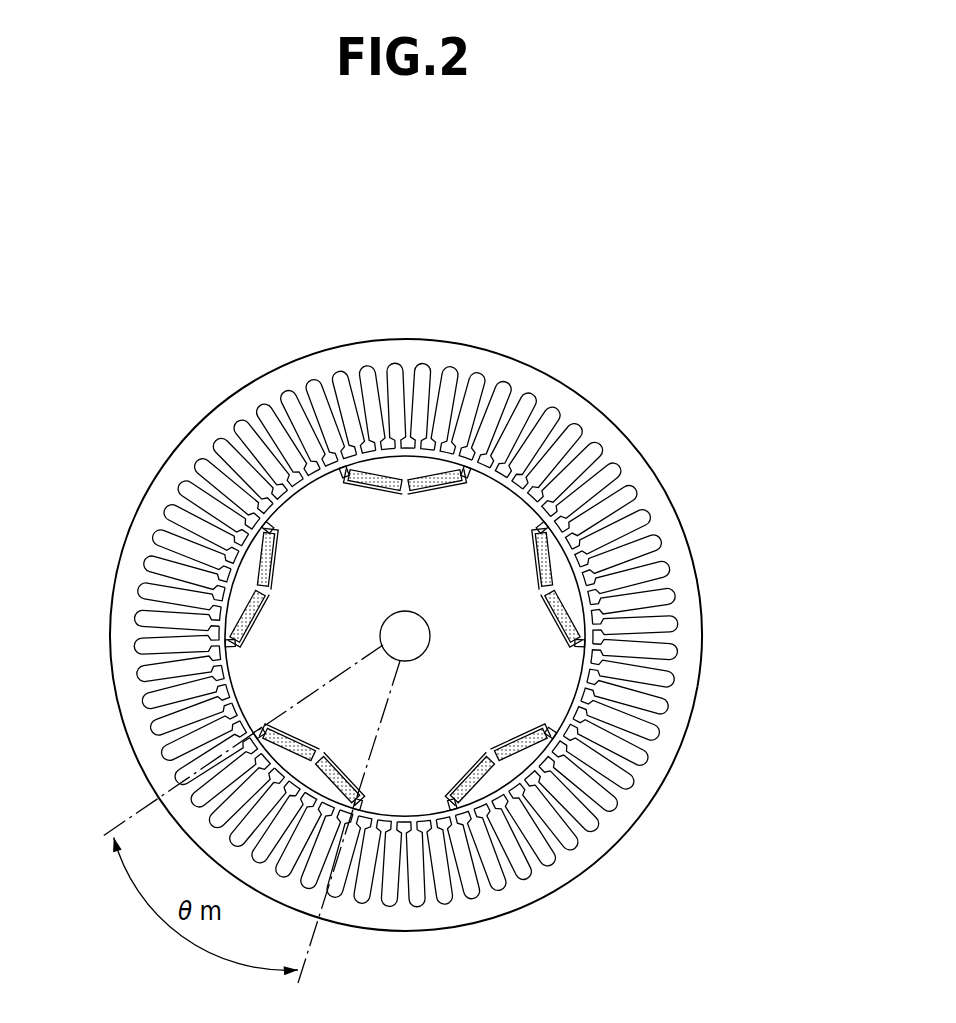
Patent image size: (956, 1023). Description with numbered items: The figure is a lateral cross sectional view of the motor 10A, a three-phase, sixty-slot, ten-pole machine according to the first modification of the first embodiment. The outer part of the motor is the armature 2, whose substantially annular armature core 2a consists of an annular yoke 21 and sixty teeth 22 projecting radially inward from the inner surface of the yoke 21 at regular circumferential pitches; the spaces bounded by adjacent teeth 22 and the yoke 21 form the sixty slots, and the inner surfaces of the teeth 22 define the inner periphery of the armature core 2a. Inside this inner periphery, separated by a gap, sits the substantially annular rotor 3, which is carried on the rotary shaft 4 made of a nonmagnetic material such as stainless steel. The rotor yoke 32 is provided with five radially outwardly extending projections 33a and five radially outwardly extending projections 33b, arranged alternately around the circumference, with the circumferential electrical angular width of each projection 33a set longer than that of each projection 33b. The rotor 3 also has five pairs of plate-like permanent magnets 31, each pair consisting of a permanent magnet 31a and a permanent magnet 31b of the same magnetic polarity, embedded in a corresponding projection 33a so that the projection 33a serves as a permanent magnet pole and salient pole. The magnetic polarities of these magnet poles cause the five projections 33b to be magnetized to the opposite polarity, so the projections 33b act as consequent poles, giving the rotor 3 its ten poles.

The motor 10A is at (568, 289).
The armature 2 is at (694, 548).
The armature core 2a is at (690, 749).
The yoke 21 is at (597, 433).
The teeth 22 is at (513, 403).
The rotor 3 is at (287, 623).
The yoke 32 is at (270, 523).
The rotary shaft 4 is at (398, 620).
The permanent magnets 31 is at (488, 215).
The permanent magnet 31a is at (378, 476).
The permanent magnet 31b is at (433, 476).
The radially outwardly extending projections 33a is at (513, 770).
The radially outwardly extending projections 33b is at (430, 802).